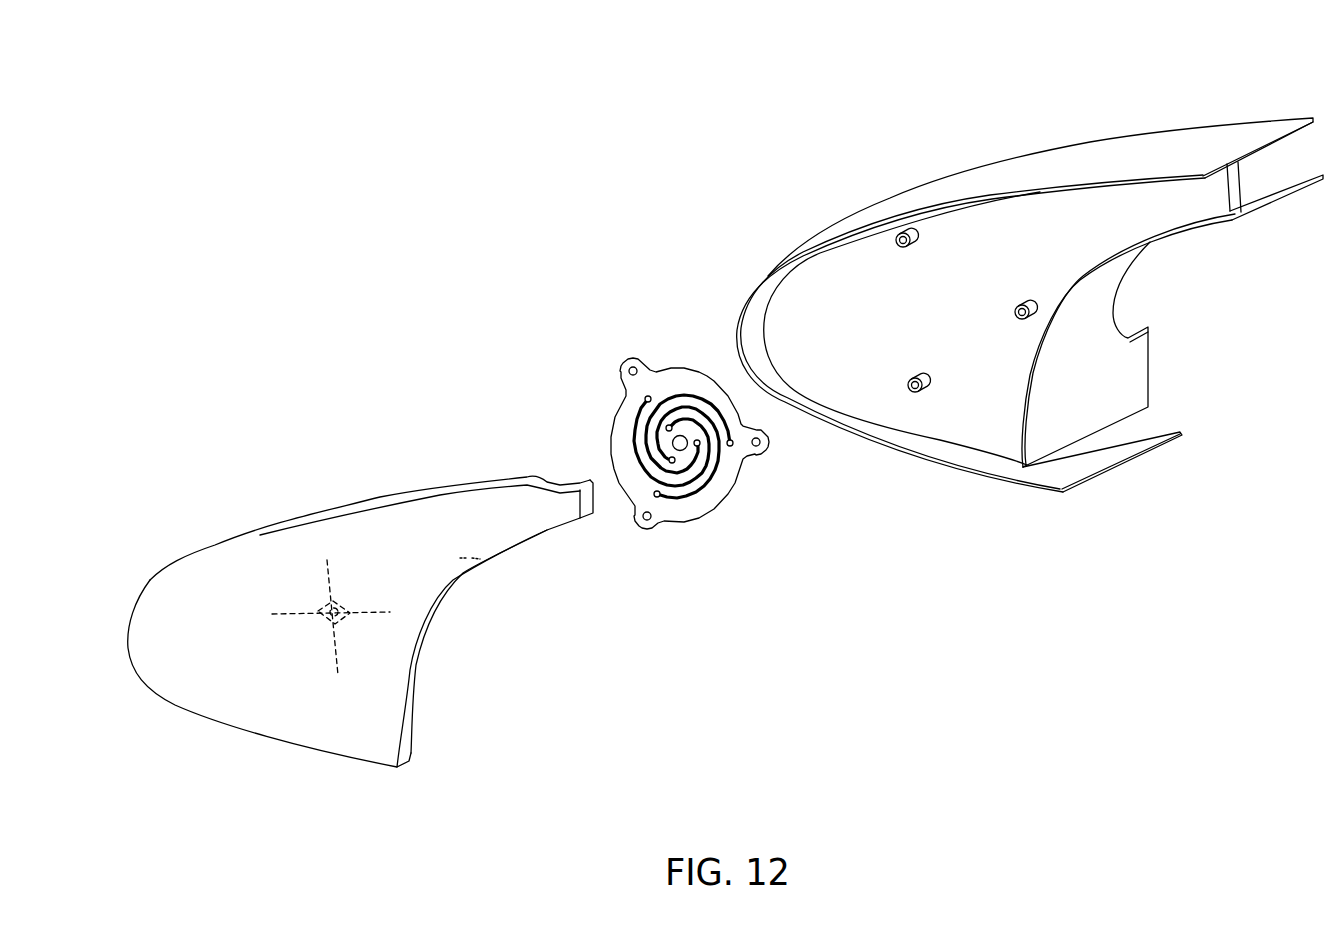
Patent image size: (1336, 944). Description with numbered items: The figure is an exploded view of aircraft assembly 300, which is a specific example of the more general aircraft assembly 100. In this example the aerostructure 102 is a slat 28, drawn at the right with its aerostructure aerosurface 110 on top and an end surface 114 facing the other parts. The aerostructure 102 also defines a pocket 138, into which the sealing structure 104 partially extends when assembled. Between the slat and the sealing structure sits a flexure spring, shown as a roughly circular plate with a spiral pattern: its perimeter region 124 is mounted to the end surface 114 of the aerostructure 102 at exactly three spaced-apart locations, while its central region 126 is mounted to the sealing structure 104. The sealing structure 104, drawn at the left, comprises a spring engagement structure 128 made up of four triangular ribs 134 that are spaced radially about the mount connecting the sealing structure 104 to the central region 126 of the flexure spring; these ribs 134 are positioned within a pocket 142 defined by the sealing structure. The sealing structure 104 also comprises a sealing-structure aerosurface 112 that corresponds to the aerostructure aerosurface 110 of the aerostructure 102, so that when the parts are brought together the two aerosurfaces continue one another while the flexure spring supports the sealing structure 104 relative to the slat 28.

The aircraft assembly 100 is at (541, 81).
The aircraft assembly 300 is at (622, 81).
The aerostructure 102 is at (1009, 116).
The slat 28 is at (1084, 143).
The aerostructure aerosurface 110 is at (1110, 173).
The end surface 114 is at (854, 333).
The pocket 138 is at (904, 429).
The perimeter region 124 is at (683, 505).
The central region 126 is at (682, 457).
The sealing structure 104 is at (185, 564).
The sealing-structure aerosurface 112 is at (497, 483).
The pocket 142 is at (485, 561).
The spring engagement structure 128 is at (370, 616).
The triangular ribs 134 is at (293, 609).